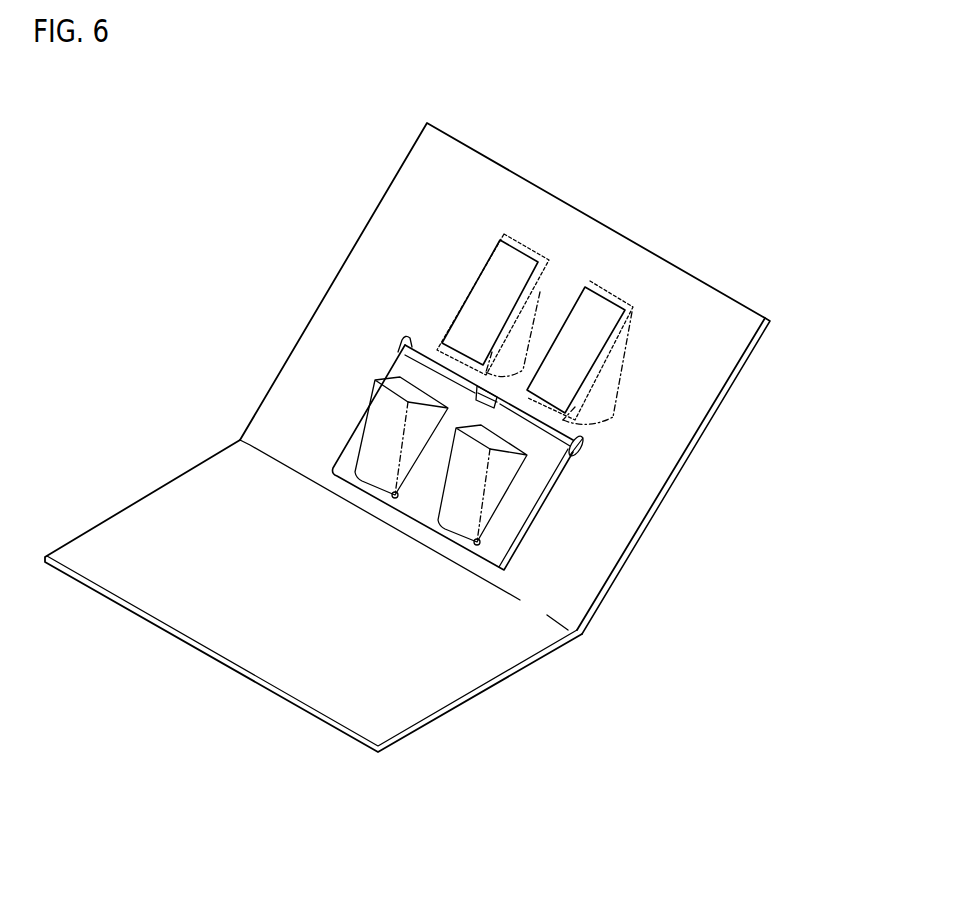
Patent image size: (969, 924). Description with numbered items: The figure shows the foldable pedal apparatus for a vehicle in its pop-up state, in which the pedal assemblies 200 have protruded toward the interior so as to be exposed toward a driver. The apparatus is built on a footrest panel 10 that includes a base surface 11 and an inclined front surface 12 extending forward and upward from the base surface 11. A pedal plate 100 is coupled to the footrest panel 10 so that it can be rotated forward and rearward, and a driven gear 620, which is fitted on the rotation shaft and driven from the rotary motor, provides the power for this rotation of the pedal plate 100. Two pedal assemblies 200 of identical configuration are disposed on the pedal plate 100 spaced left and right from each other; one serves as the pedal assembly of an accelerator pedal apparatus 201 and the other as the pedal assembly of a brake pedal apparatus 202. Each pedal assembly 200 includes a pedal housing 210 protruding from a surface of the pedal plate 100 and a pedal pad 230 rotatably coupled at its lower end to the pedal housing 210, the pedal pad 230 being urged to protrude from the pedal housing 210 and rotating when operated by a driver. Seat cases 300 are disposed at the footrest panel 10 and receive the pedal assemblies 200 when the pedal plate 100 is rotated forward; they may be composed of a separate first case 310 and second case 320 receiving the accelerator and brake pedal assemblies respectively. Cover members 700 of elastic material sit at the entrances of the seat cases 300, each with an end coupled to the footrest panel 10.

The footrest panel 10 is at (407, 416).
The base surface 11 is at (192, 592).
The inclined front surface 12 is at (468, 177).
The pedal plate 100 is at (372, 394).
The pedal assemblies 200 is at (452, 483).
The pedal assembly of an accelerator pedal apparatus 201 is at (497, 493).
The pedal assembly of a brake pedal apparatus 202 is at (404, 483).
The pedal housing 210 is at (513, 470).
The pedal pad 230 is at (387, 418).
The seat cases 300 is at (703, 271).
The first case 310 is at (617, 388).
The second case 320 is at (533, 313).
The driven gear 620 is at (488, 388).
The cover members 700 is at (500, 275).